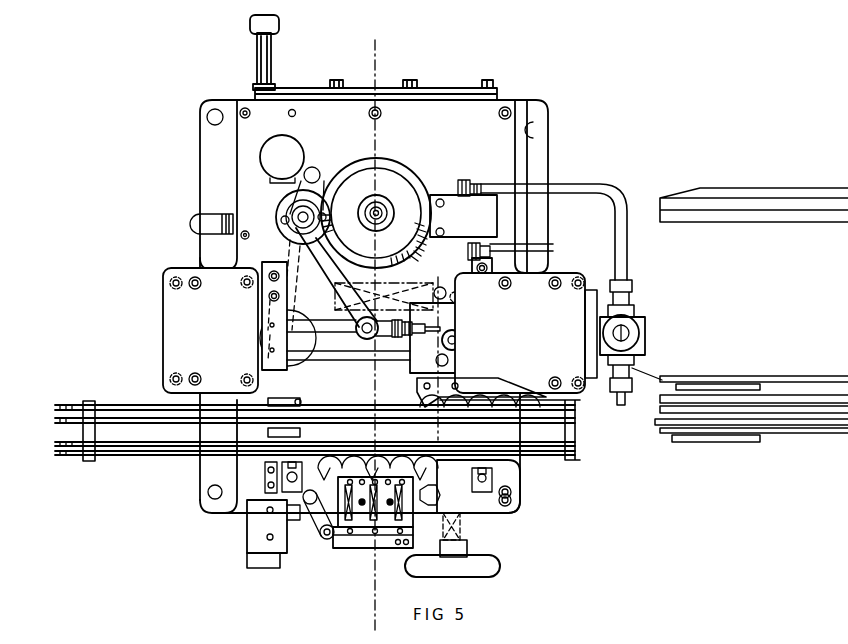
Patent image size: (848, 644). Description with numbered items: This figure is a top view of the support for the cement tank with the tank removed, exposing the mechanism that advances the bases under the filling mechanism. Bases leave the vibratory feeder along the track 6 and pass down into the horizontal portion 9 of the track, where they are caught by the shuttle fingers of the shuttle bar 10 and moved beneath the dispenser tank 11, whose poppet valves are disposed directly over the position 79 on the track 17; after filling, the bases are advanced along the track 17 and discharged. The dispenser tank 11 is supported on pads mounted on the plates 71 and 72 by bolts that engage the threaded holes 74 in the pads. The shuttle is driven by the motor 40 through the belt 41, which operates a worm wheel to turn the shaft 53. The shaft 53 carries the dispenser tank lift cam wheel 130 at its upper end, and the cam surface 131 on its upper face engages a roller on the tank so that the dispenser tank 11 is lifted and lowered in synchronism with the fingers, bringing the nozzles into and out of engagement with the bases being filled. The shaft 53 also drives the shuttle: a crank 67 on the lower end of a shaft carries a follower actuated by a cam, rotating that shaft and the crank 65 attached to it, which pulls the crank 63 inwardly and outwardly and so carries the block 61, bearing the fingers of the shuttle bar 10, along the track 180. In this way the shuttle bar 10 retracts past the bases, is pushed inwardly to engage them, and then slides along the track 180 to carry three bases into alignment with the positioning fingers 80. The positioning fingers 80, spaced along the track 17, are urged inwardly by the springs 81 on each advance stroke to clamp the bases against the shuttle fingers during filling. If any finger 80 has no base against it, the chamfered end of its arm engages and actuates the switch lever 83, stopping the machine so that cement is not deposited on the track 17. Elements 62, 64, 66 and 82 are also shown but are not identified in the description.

The track 6 is at (222, 340).
The horizontal portion of the track 9 is at (125, 455).
The shuttle bar 10 is at (502, 378).
The dispenser tank 11 is at (375, 40).
The track 17 is at (583, 460).
The motor 40 is at (672, 254).
The belt 41 is at (622, 410).
The shaft 53 is at (378, 205).
The block 61 is at (412, 368).
The pivot pin 62 is at (448, 318).
The crank 63 is at (430, 357).
The pivot 64 is at (365, 340).
The crank 65 is at (337, 257).
The hub 66 is at (300, 203).
The crank 67 is at (314, 167).
The plate 71 is at (566, 356).
The plate 72 is at (205, 360).
The threaded holes 74 is at (176, 288).
The position 79 is at (440, 434).
The positioning fingers 80 is at (470, 487).
The springs 81 is at (410, 522).
The handle 82 is at (378, 548).
The switch lever 83 is at (316, 527).
The cam 130 is at (416, 171).
The cam surface 131 is at (361, 165).
The track 180 is at (379, 356).